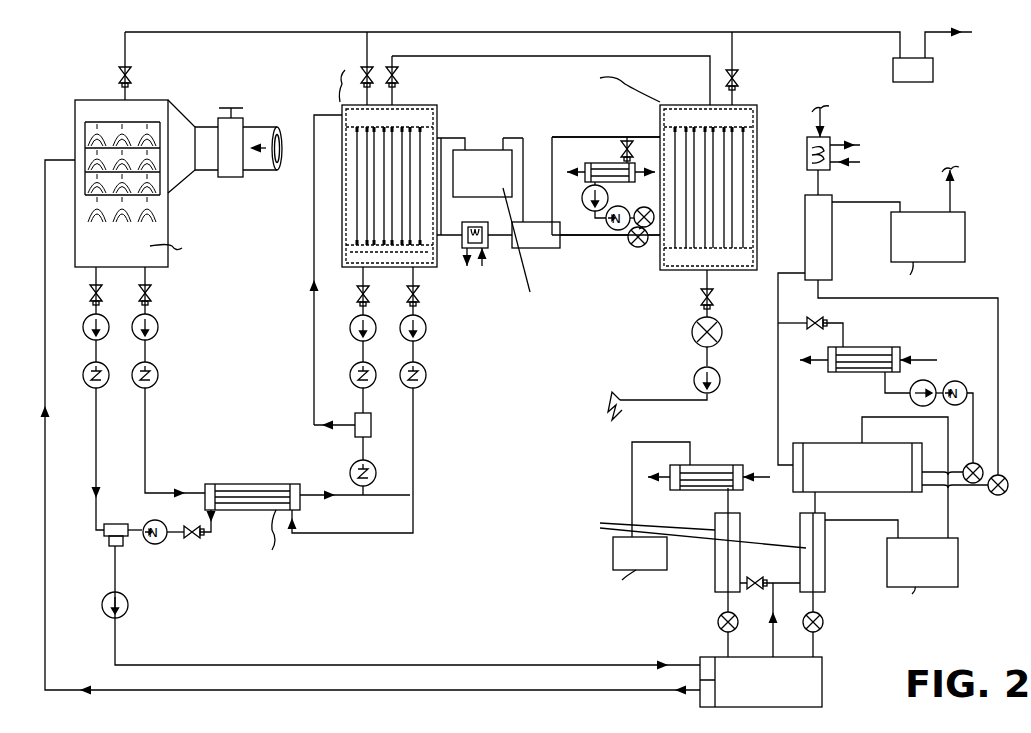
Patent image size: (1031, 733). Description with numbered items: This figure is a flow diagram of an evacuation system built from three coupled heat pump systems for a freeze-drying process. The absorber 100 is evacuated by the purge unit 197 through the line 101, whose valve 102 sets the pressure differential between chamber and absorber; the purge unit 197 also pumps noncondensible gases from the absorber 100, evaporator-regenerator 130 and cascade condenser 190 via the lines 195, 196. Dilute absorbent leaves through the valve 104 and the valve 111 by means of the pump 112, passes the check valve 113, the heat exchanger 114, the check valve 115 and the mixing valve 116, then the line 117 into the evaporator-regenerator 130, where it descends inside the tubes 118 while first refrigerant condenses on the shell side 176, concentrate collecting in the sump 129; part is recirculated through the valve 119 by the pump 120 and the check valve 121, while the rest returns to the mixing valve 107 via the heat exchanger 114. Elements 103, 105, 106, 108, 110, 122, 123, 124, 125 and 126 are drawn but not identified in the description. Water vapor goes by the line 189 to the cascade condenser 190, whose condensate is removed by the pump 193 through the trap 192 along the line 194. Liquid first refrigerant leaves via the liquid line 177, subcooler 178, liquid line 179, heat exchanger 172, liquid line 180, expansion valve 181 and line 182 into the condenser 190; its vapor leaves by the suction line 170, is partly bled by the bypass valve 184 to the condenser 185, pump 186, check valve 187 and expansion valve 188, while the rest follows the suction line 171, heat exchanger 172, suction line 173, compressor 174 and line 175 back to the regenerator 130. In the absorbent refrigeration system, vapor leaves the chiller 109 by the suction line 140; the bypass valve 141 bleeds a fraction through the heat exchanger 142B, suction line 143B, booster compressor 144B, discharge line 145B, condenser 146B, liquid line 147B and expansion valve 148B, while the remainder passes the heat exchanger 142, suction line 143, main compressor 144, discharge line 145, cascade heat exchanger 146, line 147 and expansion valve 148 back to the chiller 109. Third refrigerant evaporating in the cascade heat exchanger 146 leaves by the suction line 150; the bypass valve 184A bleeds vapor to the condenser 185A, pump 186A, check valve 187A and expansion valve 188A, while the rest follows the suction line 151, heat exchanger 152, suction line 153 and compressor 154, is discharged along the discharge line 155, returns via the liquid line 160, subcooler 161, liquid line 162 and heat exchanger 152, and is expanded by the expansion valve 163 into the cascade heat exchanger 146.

The absorber 100 is at (165, 96).
The line 101 is at (266, 130).
The valve 102 is at (240, 95).
The spray nozzles 103 is at (108, 208).
The valve 104 is at (90, 299).
The pump 105 is at (83, 328).
The flow meter 106 is at (83, 375).
The mixing valve 107 is at (136, 510).
The pump 108 is at (130, 602).
The absorbent chiller 109 is at (822, 688).
The conduit 110 is at (45, 460).
The valve 111 is at (154, 299).
The pump 112 is at (158, 328).
The check valve 113 is at (158, 376).
The heat exchanger 114 is at (264, 484).
The check valve 115 is at (345, 474).
The mixing valve 116 is at (371, 425).
The line 117 is at (314, 300).
The tubes 118 is at (359, 190).
The valve 119 is at (356, 300).
The pump 120 is at (352, 334).
The check valve 121 is at (350, 376).
The valve 122 is at (425, 292).
The pump 123 is at (426, 330).
The flow meter 124 is at (426, 377).
The valve 125 is at (194, 538).
The meter 126 is at (171, 543).
The evaporator-regenerator sump 129 is at (390, 256).
The evaporator-regenerator 130 is at (340, 157).
The suction line 140 is at (780, 638).
The proportioning bypass valve 141 is at (754, 580).
The liquid-vapor suction line heat exchanger 142 is at (802, 544).
The liquid-vapor suction line heat exchanger 142B is at (715, 584).
The suction line 143 is at (858, 520).
The suction line 143B is at (715, 518).
The main compressor 144 is at (940, 575).
The booster compressor 144B is at (573, 548).
The discharge line 145 is at (948, 516).
The discharge line 145B is at (629, 496).
The cascade heat exchanger 146 is at (838, 420).
The condenser 146B is at (712, 465).
The line 147 is at (815, 496).
The liquid line 147B is at (734, 496).
The expansion valve 148 is at (824, 624).
The expansion valve 148B is at (718, 622).
The suction line 150 is at (778, 395).
The suction line 151 is at (778, 310).
The liquid-vapor suction line heat exchanger 152 is at (805, 238).
The suction line 153 is at (896, 202).
The compressor 154 is at (901, 254).
The discharge line 155 is at (948, 190).
The liquid line 160 is at (824, 120).
The cooling medium subcooler 161 is at (807, 156).
The liquid line 162 is at (817, 188).
The expansion valve 163 is at (990, 494).
The suction line 170 is at (648, 110).
The suction line 171 is at (562, 138).
The liquid-vapor suction line heat exchanger 172 is at (552, 246).
The suction line 173 is at (543, 122).
The heat pump compressor 174 is at (531, 232).
The line 175 is at (455, 138).
The shell side 176 is at (402, 205).
The liquid line 177 is at (456, 231).
The subcooler 178 is at (468, 266).
The liquid line 179 is at (495, 238).
The liquid line 180 is at (587, 238).
The expansion valve 181 is at (634, 248).
The line 182 is at (654, 241).
The proportioning bypass control valve 184 is at (626, 140).
The proportioning bypass valve 184A is at (820, 320).
The condenser 185 is at (600, 173).
The condenser 185A is at (901, 347).
The pump 186 is at (590, 206).
The pump 186A is at (910, 395).
The check valve 187 is at (618, 229).
The check valve 187A is at (970, 374).
The expansion valve 188 is at (655, 204).
The expansion valve 188A is at (967, 462).
The line 189 is at (564, 58).
The cascade condenser 190 is at (692, 105).
The trap 192 is at (691, 332).
The pump 193 is at (694, 380).
The line 194 is at (632, 400).
The lines 195 is at (125, 49).
The line 196 is at (558, 32).
The purge unit 197 is at (933, 70).